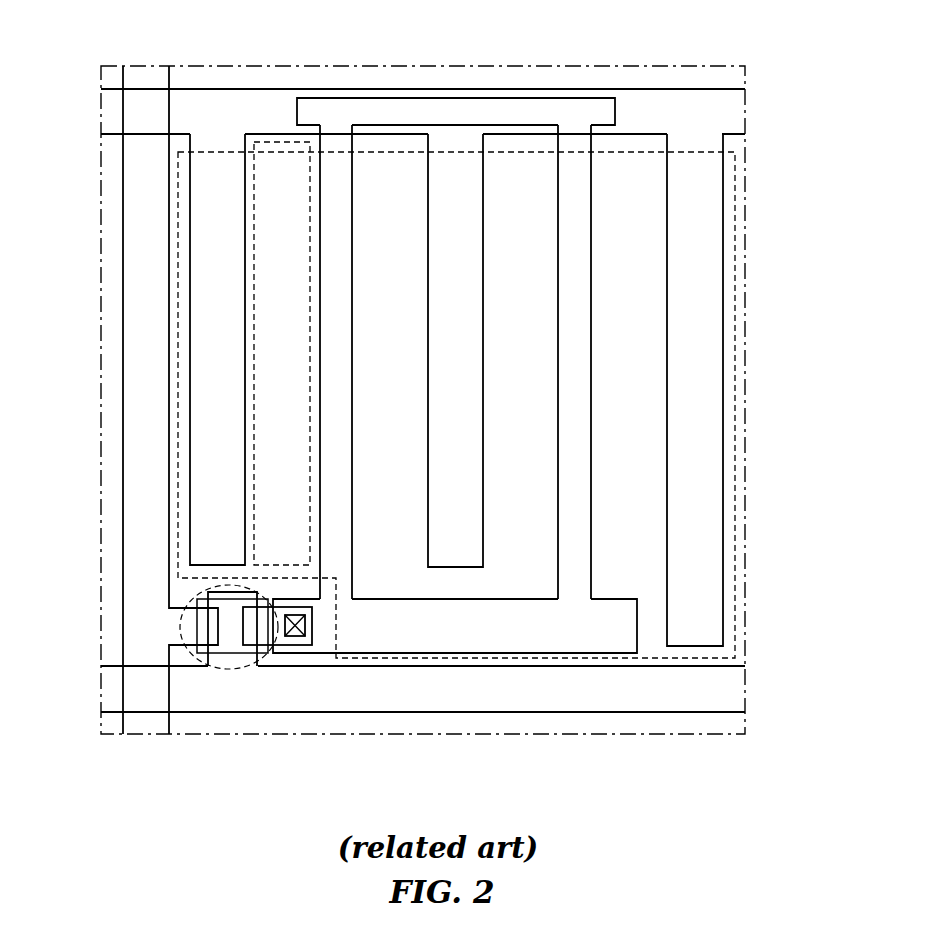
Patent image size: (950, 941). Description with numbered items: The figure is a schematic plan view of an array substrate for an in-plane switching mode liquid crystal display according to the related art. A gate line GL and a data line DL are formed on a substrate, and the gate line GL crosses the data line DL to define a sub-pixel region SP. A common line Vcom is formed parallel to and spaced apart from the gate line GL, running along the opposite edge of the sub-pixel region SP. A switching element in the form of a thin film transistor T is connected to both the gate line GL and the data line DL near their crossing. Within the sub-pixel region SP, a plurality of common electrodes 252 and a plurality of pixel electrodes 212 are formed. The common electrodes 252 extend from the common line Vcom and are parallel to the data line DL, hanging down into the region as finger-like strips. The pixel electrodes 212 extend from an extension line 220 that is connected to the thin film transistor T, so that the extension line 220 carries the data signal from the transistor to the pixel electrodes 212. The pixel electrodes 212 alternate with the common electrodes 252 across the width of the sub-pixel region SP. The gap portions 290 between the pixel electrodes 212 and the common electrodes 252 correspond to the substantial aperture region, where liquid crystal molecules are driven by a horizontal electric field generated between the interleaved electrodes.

The common electrodes 252 is at (218, 170).
The pixel electrodes 212 is at (339, 563).
The extension line 220 is at (513, 607).
The gap portions 290 is at (255, 232).
The common line Vcom is at (733, 108).
The data line DL is at (135, 542).
The gate line GL is at (455, 690).
The thin film transistor T is at (224, 668).
The sub-pixel region SP is at (661, 660).